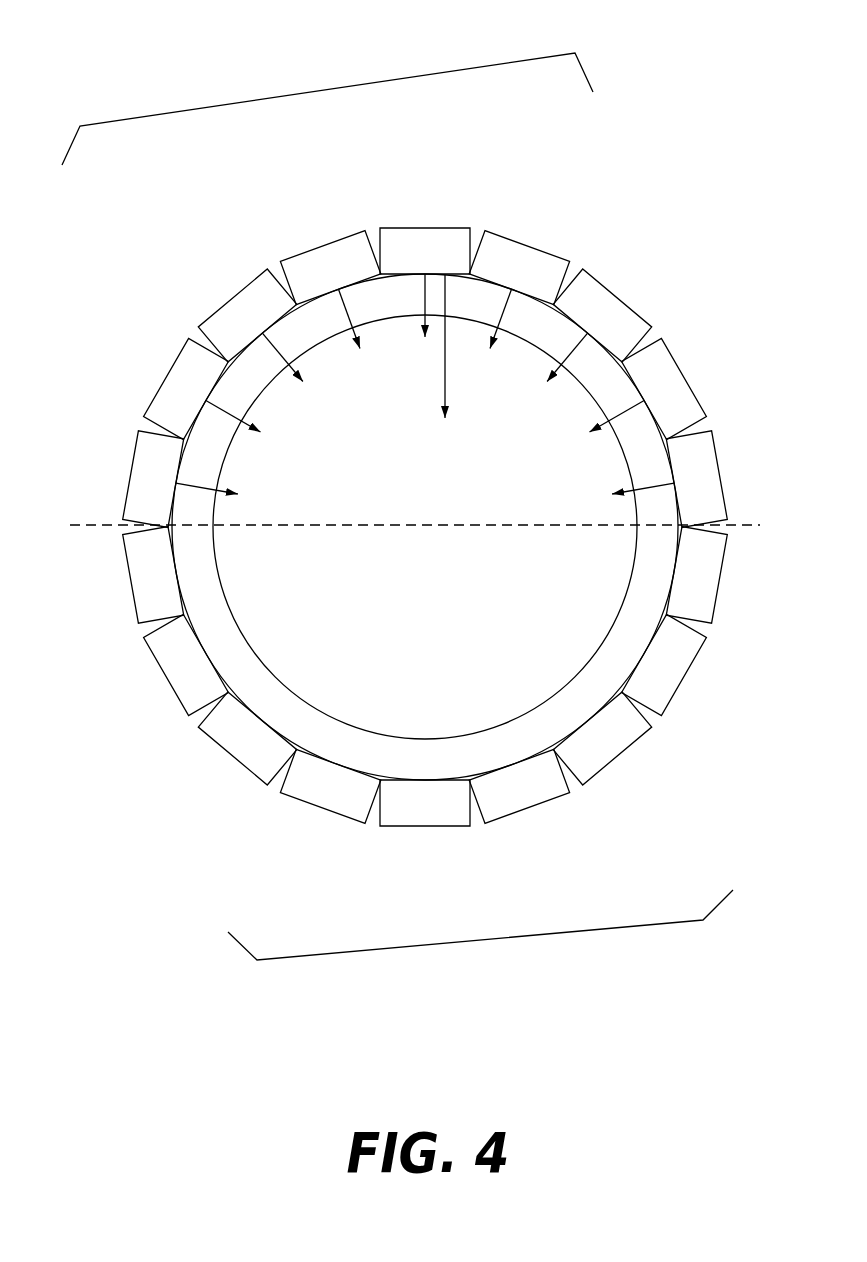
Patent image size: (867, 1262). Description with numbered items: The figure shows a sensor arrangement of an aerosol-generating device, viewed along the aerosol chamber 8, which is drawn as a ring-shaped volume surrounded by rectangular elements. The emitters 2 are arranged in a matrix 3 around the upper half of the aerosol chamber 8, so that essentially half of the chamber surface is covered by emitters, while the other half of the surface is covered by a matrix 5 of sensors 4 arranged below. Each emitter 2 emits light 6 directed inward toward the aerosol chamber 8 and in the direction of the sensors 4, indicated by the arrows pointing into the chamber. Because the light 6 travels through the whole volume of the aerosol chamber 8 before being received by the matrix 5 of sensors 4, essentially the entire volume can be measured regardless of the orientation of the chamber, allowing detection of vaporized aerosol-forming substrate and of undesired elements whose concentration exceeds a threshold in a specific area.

The emitter 2 is at (327, 260).
The matrix of emitters 3 is at (318, 88).
The sensor 4 is at (235, 735).
The matrix of sensors 5 is at (473, 940).
The light 6 is at (422, 300).
The aerosol chamber 8 is at (444, 275).